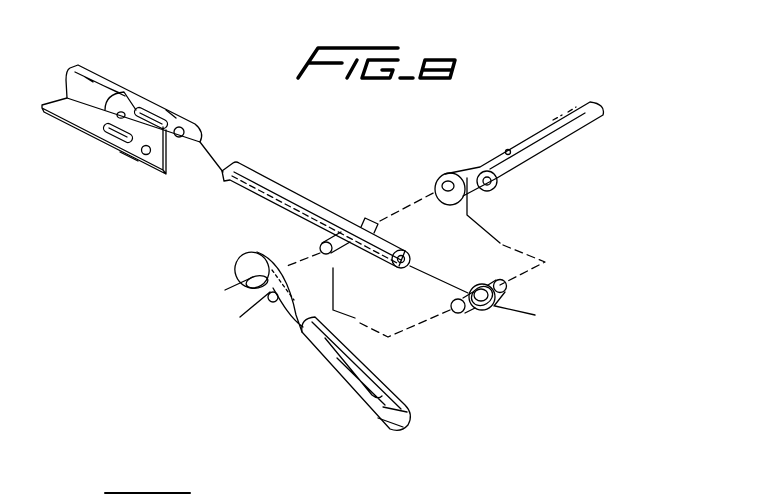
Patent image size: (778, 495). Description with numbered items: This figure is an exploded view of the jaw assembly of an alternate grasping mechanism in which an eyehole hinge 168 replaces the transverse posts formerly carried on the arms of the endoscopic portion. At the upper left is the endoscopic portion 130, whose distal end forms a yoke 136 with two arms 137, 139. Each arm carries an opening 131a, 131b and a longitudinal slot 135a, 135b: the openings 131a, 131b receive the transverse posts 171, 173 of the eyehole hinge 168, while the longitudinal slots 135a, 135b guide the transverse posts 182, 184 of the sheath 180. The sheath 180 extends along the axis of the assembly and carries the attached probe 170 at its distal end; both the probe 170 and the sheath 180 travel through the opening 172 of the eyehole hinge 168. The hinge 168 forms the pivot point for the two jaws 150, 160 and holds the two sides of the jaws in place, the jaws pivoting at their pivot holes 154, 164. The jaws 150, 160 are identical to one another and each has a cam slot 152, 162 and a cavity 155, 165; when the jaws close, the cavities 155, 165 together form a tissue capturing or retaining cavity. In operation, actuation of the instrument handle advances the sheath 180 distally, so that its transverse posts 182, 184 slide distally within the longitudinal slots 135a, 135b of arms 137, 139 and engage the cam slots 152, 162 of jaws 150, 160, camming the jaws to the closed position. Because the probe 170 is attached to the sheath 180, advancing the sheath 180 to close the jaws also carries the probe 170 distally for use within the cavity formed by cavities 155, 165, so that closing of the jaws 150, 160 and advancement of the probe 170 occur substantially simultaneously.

The endoscopic portion 130 is at (86, 63).
The yoke 136 is at (139, 88).
The longitudinal slot 135a is at (157, 110).
The arm 137 is at (172, 116).
The opening 131a is at (183, 130).
The longitudinal slot 135b is at (112, 142).
The arm 139 is at (130, 158).
The opening 131b is at (146, 155).
The sheath 180 is at (393, 248).
The probe 170 is at (406, 272).
The transverse post 182 is at (372, 218).
The transverse post 184 is at (321, 243).
The jaw 150 is at (532, 131).
The cam slot 152 is at (436, 187).
The pivot hole 154 is at (496, 192).
The cavity 155 is at (553, 143).
The eyehole hinge 168 is at (505, 318).
The transverse post 171 is at (498, 277).
The opening 172 is at (497, 301).
The transverse post 173 is at (453, 313).
The jaw 160 is at (343, 400).
The cam slot 162 is at (237, 272).
The pivot hole 164 is at (270, 305).
The cavity 165 is at (367, 373).